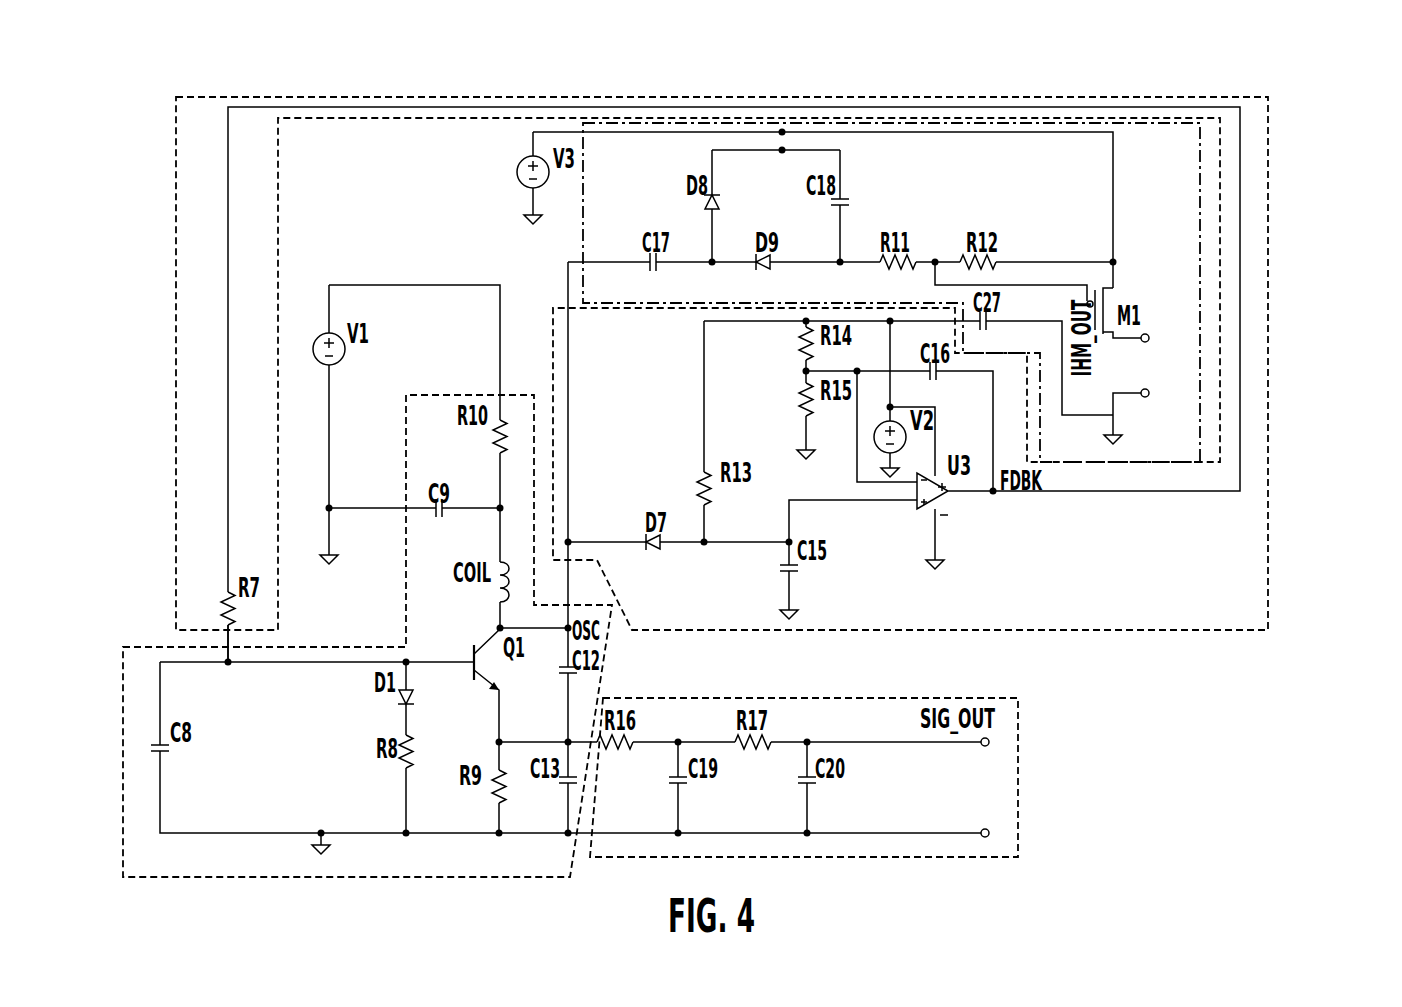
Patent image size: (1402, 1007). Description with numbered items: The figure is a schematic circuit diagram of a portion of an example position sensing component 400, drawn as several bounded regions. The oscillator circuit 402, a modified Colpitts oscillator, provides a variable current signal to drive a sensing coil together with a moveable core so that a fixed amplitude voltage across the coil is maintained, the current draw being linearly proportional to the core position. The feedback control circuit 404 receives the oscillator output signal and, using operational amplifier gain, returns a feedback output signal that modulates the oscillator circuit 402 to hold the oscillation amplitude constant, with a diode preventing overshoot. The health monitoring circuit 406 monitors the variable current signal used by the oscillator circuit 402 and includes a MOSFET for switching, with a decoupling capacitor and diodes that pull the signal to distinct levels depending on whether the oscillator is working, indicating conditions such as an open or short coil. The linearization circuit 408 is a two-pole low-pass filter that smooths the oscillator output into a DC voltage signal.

The position sensing component 400 is at (1334, 103).
The oscillator circuit 402 is at (370, 877).
The feedback control circuit 404 is at (176, 128).
The health monitoring circuit 406 is at (1200, 300).
The linearization circuit 408 is at (1020, 822).